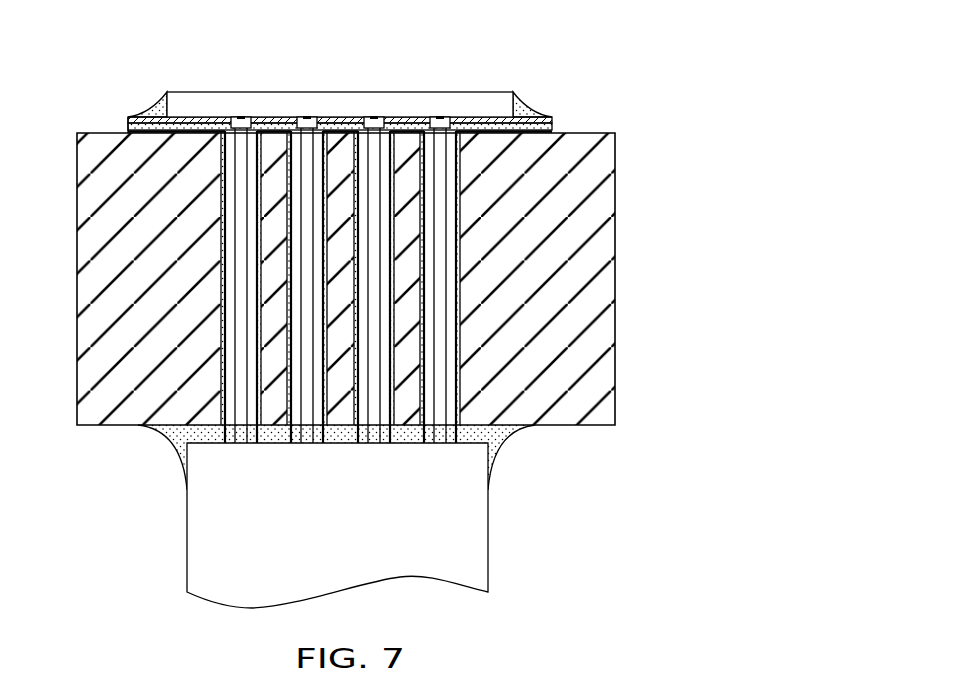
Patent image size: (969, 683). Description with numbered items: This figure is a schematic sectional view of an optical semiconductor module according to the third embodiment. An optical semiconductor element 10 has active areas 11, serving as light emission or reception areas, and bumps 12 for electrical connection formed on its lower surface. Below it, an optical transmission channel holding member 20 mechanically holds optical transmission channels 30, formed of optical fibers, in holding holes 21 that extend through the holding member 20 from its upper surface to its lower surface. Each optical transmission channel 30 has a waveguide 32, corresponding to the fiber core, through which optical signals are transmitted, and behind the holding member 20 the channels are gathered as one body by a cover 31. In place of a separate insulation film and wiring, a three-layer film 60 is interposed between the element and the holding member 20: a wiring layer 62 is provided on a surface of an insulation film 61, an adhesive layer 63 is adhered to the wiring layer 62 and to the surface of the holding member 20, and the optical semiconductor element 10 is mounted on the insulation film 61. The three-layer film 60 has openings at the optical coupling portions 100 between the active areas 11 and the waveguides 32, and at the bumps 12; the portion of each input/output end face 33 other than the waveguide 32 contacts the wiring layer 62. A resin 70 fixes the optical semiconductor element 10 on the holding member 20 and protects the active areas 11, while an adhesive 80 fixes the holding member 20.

The optical semiconductor element 10 is at (200, 100).
The active areas 11 is at (243, 117).
The bumps 12 is at (487, 117).
The optical transmission channel holding member 20 is at (93, 228).
The holding holes 21 is at (223, 228).
The optical transmission channels 30 is at (460, 330).
The cover 31 is at (480, 535).
The waveguide portion 32 is at (458, 252).
The optical input/output end faces 33 is at (441, 117).
The three-layer film 60 is at (120, 121).
The insulation film 61 is at (547, 120).
The wiring layer 62 is at (552, 126).
The adhesive layer 63 is at (555, 132).
The resin 70 is at (155, 110).
The adhesive 80 is at (168, 443).
The optical coupling portions 100 is at (313, 117).